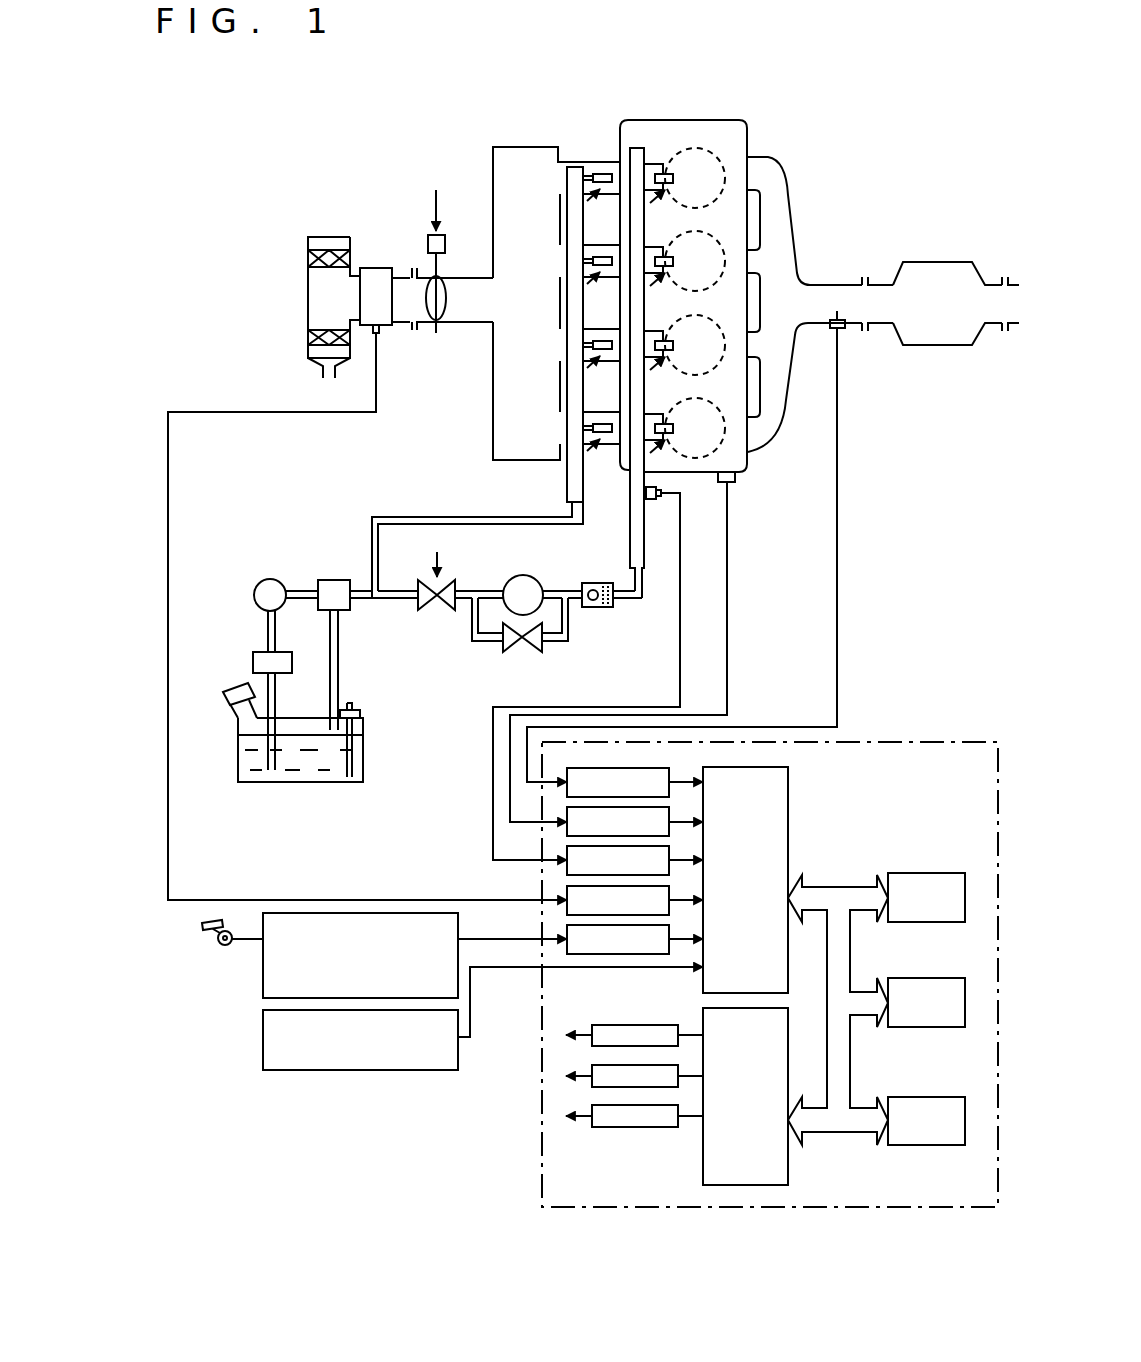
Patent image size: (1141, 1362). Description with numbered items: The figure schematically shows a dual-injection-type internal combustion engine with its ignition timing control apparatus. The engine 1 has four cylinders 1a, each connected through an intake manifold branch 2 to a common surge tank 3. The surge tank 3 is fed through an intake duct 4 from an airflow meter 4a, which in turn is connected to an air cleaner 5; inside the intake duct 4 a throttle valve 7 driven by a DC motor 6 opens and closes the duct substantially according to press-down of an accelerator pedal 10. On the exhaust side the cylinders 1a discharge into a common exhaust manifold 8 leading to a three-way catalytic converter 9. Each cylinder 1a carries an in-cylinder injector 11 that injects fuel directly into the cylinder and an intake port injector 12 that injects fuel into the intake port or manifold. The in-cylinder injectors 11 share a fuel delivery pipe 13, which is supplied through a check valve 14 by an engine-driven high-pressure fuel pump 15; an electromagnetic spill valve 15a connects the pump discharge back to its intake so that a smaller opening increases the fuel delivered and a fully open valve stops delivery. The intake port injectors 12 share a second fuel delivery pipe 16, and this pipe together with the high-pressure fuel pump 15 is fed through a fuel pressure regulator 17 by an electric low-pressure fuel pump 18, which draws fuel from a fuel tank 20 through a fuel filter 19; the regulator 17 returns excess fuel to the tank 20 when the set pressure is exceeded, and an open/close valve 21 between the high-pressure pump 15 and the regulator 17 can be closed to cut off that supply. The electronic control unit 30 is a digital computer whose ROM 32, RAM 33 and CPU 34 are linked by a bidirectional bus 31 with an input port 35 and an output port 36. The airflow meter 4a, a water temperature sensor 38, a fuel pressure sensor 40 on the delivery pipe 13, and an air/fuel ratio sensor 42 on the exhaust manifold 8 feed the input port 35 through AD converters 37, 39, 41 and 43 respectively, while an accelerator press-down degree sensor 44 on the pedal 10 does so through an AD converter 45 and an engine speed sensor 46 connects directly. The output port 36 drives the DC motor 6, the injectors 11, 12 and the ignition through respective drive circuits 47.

The engine 1 is at (754, 116).
The cylinders 1a is at (722, 152).
The intake manifold branches 2 is at (607, 168).
The surge tank 3 is at (493, 147).
The intake duct 4 is at (467, 278).
The airflow meter 4a is at (380, 268).
The air cleaner 5 is at (308, 293).
The DC motor 6 is at (428, 240).
The throttle valve 7 is at (442, 310).
The exhaust manifold 8 is at (785, 200).
The three-way catalytic converter 9 is at (937, 262).
The accelerator pedal 10 is at (210, 934).
The in-cylinder injector 11 is at (673, 178).
The intake port injector 12 is at (583, 178).
The fuel delivery pipe 13 is at (633, 160).
The check valve 14 is at (597, 607).
The high-pressure fuel pump 15 is at (528, 586).
The electromagnetic spill valve 15a is at (556, 690).
The fuel delivery pipe 16 is at (567, 484).
The fuel pressure regulator 17 is at (335, 580).
The low-pressure fuel pump 18 is at (272, 579).
The fuel filter 19 is at (255, 656).
The fuel tank 20 is at (302, 782).
The open/close valve 21 is at (434, 610).
The electronic control unit 30 is at (950, 733).
The bidirectional bus 31 is at (834, 887).
The ROM 32 is at (915, 873).
The RAM 33 is at (915, 978).
The CPU 34 is at (915, 1097).
The input port 35 is at (789, 792).
The output port 36 is at (789, 1168).
The AD converter 37 is at (557, 898).
The water temperature sensor 38 is at (736, 482).
The AD converter 39 is at (557, 821).
The fuel pressure sensor 40 is at (655, 500).
The AD converter 41 is at (557, 859).
The air/fuel ratio sensor 42 is at (841, 332).
The AD converter 43 is at (557, 781).
The accelerator press-down degree sensor 44 is at (263, 950).
The AD converter 45 is at (560, 937).
The engine speed sensor 46 is at (263, 1040).
The drive circuits 47 is at (590, 1048).